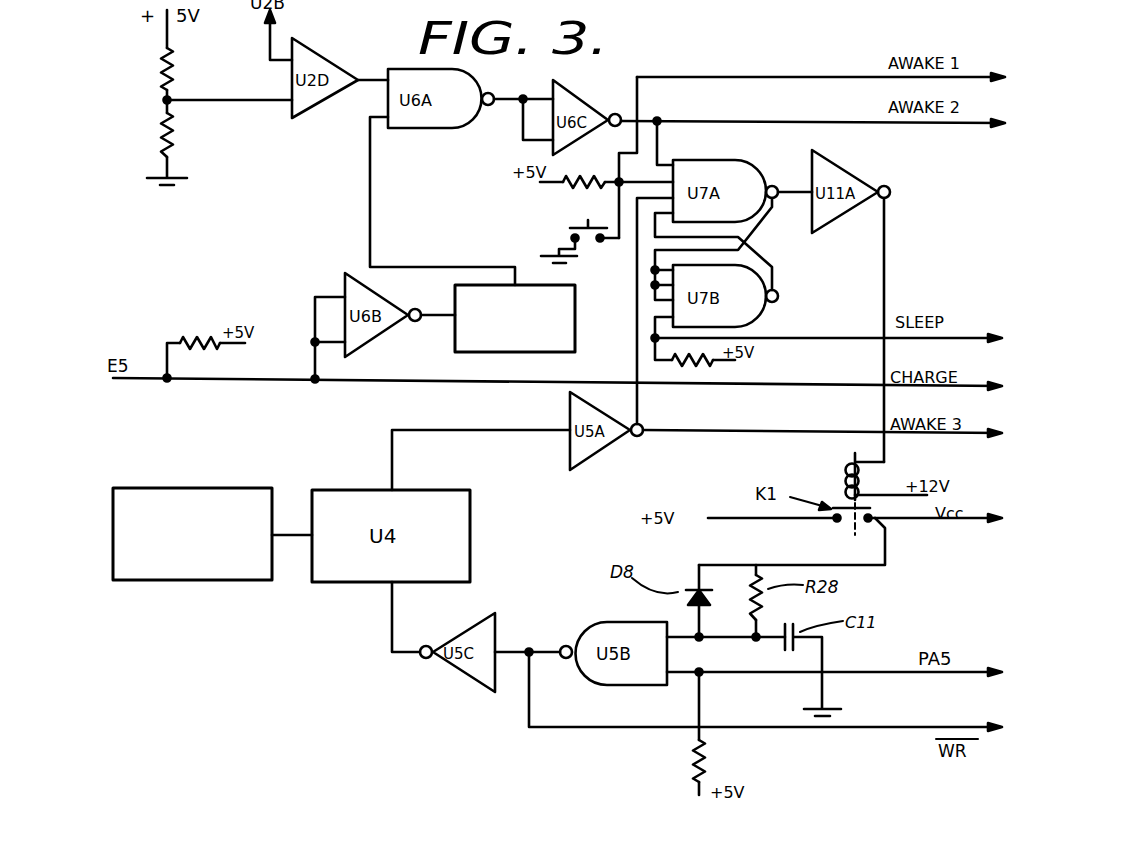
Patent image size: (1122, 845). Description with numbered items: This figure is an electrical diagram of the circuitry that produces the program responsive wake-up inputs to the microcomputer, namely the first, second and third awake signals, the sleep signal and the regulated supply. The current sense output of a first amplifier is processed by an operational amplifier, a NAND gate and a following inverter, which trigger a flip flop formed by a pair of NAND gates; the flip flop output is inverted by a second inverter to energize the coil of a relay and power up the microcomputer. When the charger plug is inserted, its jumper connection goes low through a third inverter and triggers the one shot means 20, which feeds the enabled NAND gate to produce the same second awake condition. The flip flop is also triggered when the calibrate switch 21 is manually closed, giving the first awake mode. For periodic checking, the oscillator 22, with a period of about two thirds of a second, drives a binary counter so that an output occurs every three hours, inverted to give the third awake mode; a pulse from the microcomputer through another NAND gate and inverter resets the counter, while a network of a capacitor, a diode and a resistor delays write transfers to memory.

The one shot means 20 is at (467, 352).
The calibrate switch 21 is at (575, 223).
The oscillator 22 is at (211, 486).